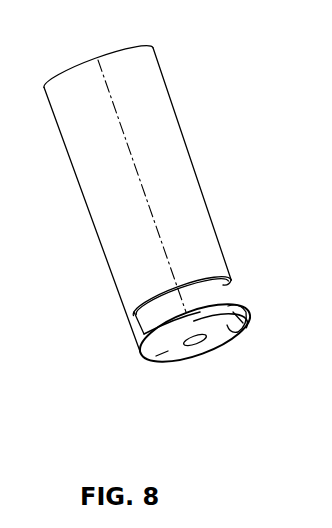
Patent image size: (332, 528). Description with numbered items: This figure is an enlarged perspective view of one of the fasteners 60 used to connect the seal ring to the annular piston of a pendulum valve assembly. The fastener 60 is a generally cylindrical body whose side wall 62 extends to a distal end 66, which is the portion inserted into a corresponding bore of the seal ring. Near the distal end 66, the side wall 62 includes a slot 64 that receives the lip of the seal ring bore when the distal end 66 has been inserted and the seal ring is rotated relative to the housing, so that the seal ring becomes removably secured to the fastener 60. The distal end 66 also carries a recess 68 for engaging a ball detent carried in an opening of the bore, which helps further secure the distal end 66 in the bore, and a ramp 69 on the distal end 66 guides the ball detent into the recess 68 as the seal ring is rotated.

The fastener 60 is at (206, 130).
The side wall 62 is at (226, 250).
The slot 64 is at (226, 294).
The distal end 66 is at (162, 350).
The recess 68 is at (194, 346).
The ramp 69 is at (229, 326).